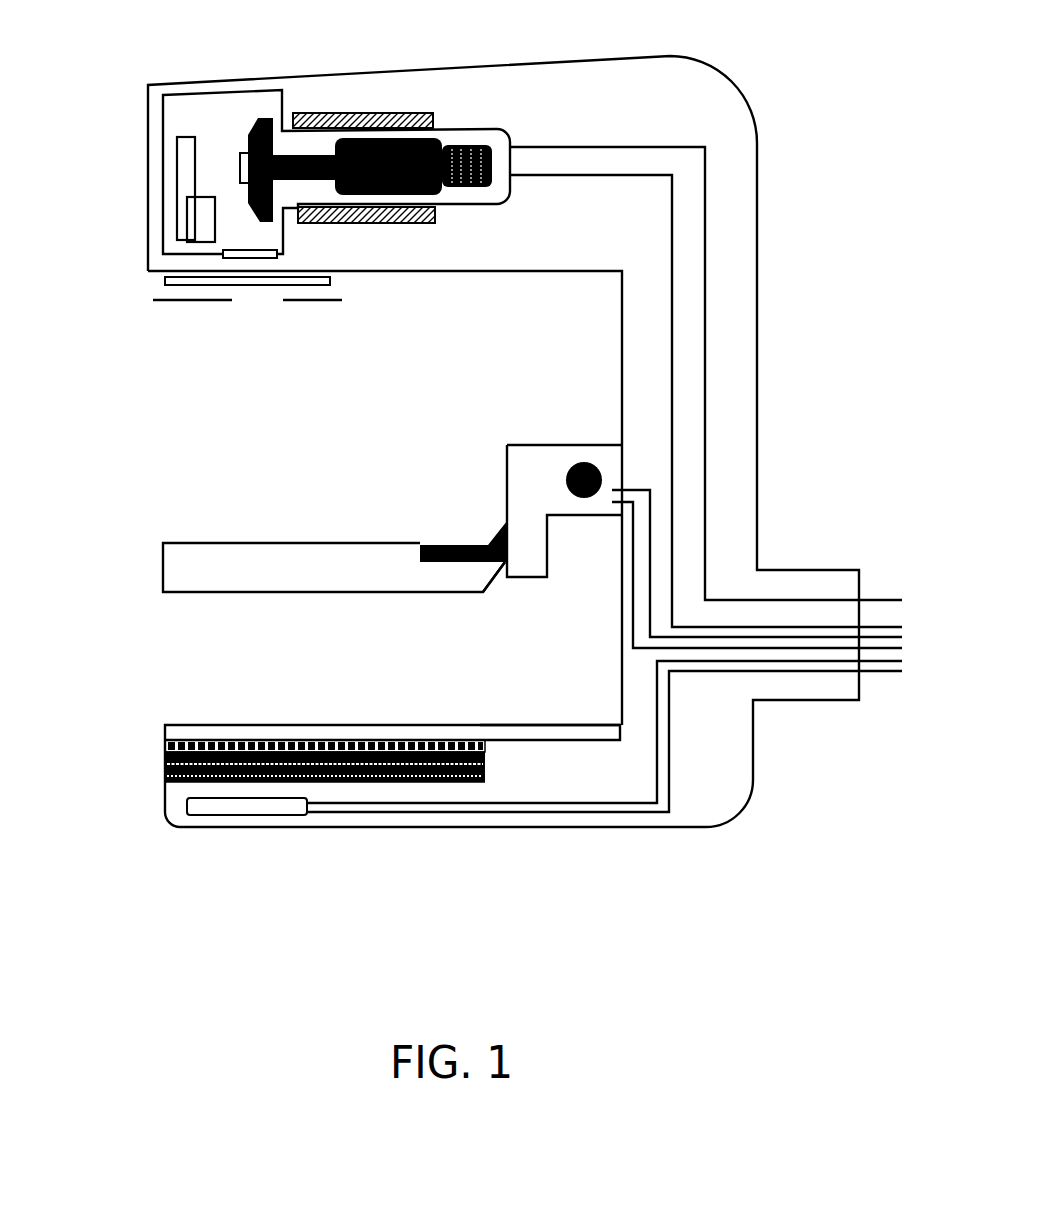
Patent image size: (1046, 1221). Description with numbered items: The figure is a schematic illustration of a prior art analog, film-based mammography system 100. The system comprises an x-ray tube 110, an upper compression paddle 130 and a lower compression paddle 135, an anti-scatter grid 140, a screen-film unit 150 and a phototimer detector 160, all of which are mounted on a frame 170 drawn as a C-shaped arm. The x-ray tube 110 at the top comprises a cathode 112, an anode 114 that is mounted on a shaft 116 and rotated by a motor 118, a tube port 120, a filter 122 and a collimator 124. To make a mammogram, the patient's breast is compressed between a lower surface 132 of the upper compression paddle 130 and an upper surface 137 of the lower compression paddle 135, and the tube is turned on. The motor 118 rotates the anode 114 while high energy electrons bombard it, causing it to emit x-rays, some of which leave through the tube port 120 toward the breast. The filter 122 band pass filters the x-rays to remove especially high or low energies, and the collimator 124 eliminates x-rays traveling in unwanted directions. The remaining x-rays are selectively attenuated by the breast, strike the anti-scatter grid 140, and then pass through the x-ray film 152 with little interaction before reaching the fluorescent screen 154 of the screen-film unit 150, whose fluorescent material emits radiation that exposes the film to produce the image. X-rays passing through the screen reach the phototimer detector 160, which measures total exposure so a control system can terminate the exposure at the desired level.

The mammography system 100 is at (472, 867).
The x-ray tube 110 is at (161, 132).
The cathode 112 is at (177, 217).
The anode 114 is at (275, 225).
The shaft 116 is at (298, 160).
The motor 118 is at (395, 140).
The tube port 120 is at (200, 262).
The filter 122 is at (163, 278).
The collimator 124 is at (200, 303).
The upper compression paddle 130 is at (424, 543).
The lower surface 132 is at (437, 603).
The lower compression paddle 135 is at (250, 718).
The upper surface 137 is at (498, 712).
The anti-scatter grid 140 is at (163, 748).
The screen-film unit 150 is at (163, 770).
The x-ray film 152 is at (487, 753).
The fluorescent screen 154 is at (487, 770).
The phototimer detector 160 is at (185, 800).
The frame 170 is at (758, 327).